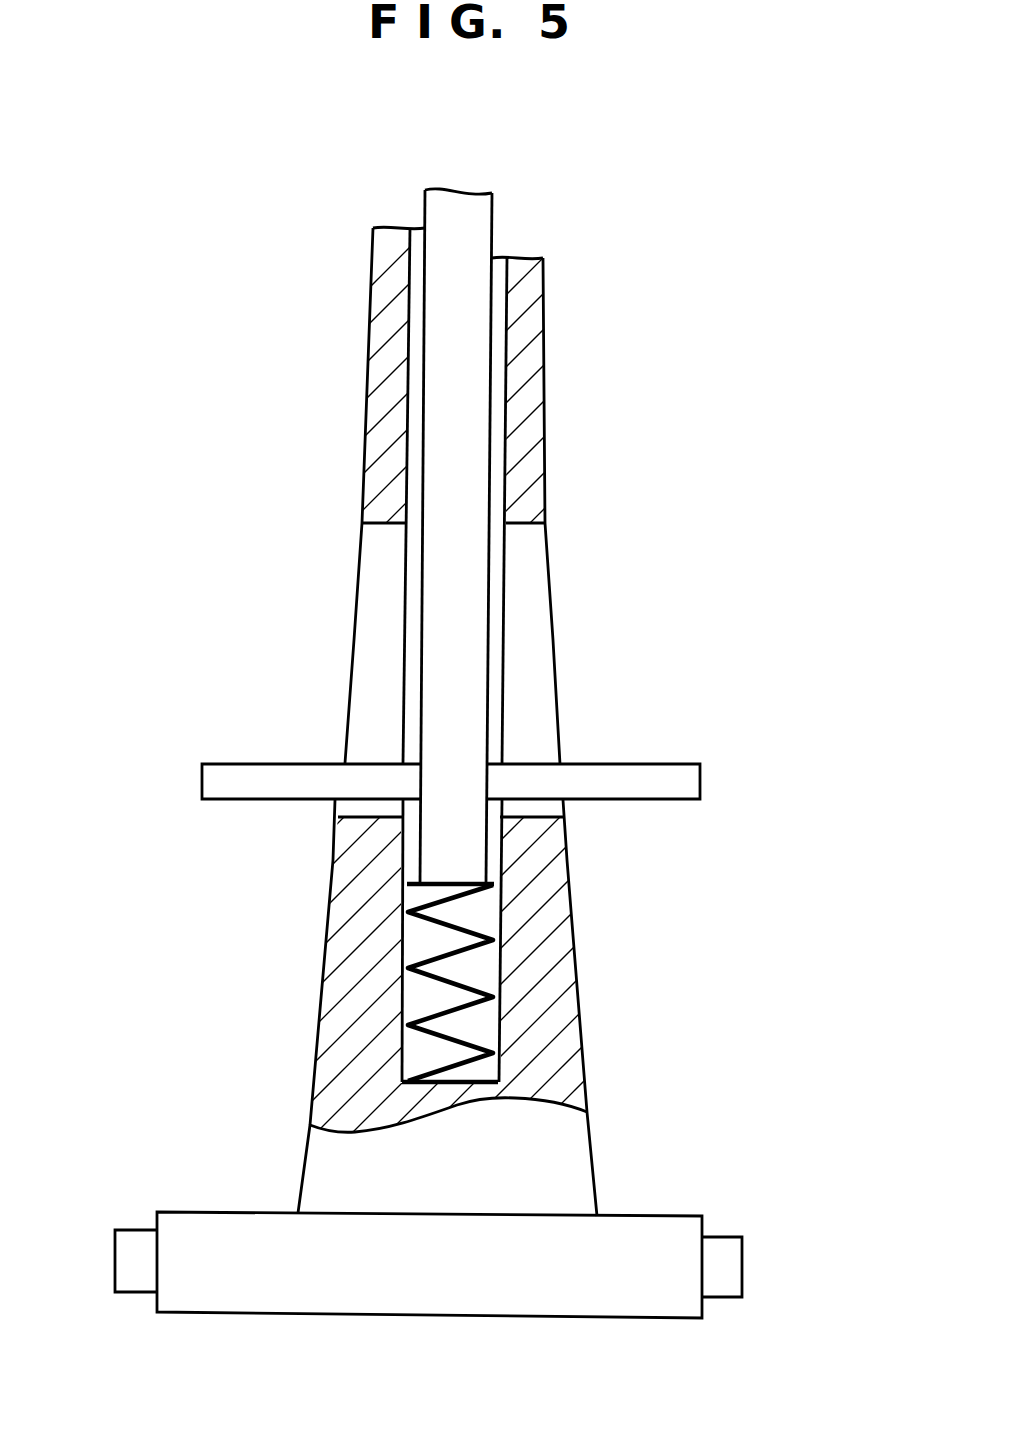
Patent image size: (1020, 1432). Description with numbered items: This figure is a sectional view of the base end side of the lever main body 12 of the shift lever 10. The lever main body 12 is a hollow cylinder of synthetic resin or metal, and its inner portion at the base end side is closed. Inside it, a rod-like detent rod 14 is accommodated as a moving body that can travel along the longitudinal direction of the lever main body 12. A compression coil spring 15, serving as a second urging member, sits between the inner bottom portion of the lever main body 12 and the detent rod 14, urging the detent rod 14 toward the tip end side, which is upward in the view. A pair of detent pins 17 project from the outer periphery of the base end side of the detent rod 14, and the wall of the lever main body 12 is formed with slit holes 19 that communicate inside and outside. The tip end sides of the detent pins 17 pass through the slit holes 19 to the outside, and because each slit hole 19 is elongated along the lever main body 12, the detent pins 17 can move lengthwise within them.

The shift lever 10 is at (537, 362).
The lever main body 12 is at (510, 700).
The detent rod 14 is at (478, 297).
The compression coil spring 15 is at (463, 975).
The detent pins 17 is at (263, 763).
The slit holes 19 is at (522, 527).